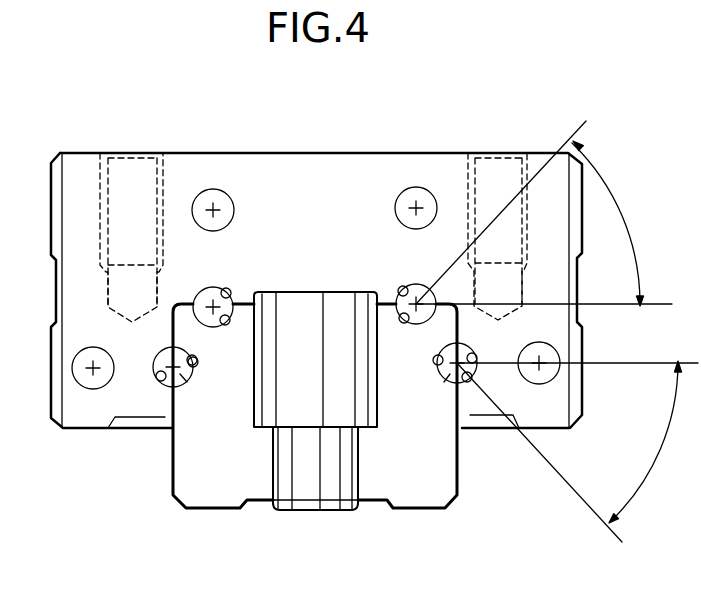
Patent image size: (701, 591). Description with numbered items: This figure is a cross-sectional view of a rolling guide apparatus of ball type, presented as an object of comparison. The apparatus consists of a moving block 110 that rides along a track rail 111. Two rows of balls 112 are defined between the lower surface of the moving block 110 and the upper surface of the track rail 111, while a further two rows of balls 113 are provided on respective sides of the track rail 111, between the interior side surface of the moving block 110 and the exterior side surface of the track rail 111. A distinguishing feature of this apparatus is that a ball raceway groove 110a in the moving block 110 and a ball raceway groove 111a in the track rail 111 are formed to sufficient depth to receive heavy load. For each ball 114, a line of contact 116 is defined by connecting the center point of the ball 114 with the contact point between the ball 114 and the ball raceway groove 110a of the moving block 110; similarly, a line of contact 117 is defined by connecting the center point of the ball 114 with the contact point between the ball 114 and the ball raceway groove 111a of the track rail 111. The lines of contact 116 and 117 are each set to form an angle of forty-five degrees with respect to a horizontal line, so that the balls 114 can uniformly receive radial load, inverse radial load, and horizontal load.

The moving block 110 is at (321, 163).
The ball raceway groove of the moving block 110a is at (212, 287).
The track rail 111 is at (415, 490).
The ball raceway groove of the track rail 111a is at (194, 362).
The balls 112 is at (228, 291).
The balls 113 is at (184, 380).
The ball 114 is at (224, 321).
The line of contact 116 is at (563, 140).
The line of contact 117 is at (573, 492).